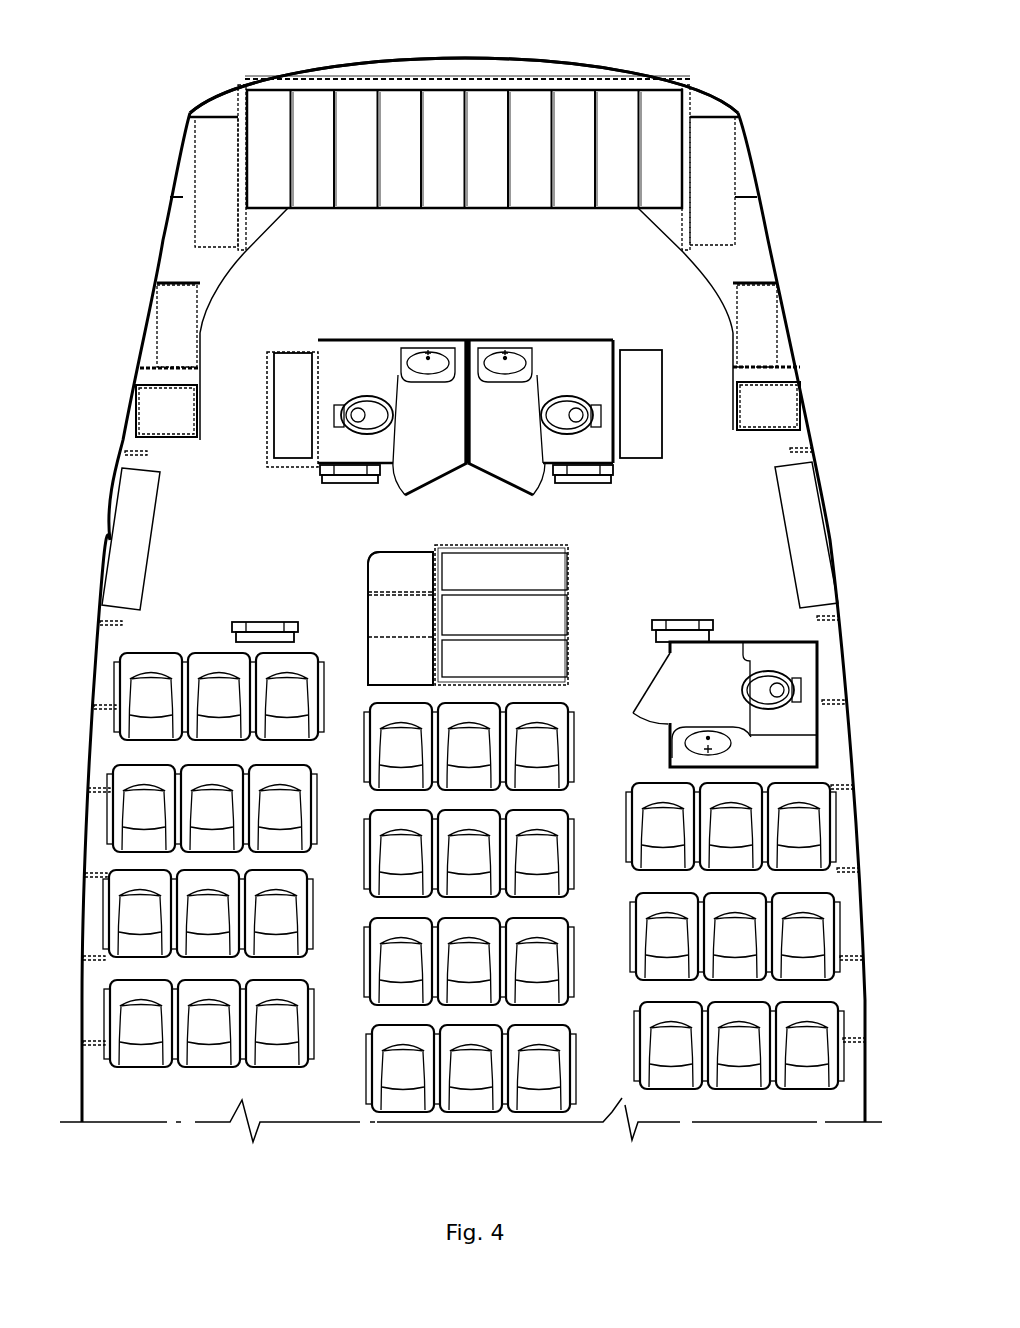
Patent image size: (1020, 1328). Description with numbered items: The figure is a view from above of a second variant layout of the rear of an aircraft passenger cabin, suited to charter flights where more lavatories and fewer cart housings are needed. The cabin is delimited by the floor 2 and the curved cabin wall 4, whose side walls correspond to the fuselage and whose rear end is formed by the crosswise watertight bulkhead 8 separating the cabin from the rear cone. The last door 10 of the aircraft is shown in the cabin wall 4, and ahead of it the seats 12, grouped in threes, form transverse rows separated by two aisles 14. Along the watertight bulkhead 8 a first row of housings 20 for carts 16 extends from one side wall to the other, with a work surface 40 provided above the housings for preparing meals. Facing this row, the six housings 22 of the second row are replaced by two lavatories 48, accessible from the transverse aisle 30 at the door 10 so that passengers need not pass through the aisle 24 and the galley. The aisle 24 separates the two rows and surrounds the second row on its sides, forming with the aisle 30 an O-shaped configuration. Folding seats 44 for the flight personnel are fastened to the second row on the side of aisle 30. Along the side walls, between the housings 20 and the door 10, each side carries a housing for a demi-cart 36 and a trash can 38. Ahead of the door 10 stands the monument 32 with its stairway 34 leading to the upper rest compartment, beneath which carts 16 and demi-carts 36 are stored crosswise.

The floor 2 is at (689, 551).
The cabin wall 4 is at (853, 727).
The watertight bulkhead 8 is at (450, 58).
The last door 10 is at (130, 536).
The seats 12 is at (403, 1092).
The aisles 14 is at (342, 1045).
The carts 16 is at (398, 208).
The housings 20 is at (568, 78).
The housings 22 is at (266, 450).
The aisle 24 is at (532, 284).
The transverse aisle 30 is at (455, 526).
The monument 32 is at (570, 546).
The stairway 34 is at (398, 570).
The demi-carts 36 is at (158, 419).
The trash can 38 is at (168, 325).
The work surface 40 is at (210, 280).
The folding seats 44 is at (352, 484).
The lavatories 48 is at (397, 390).